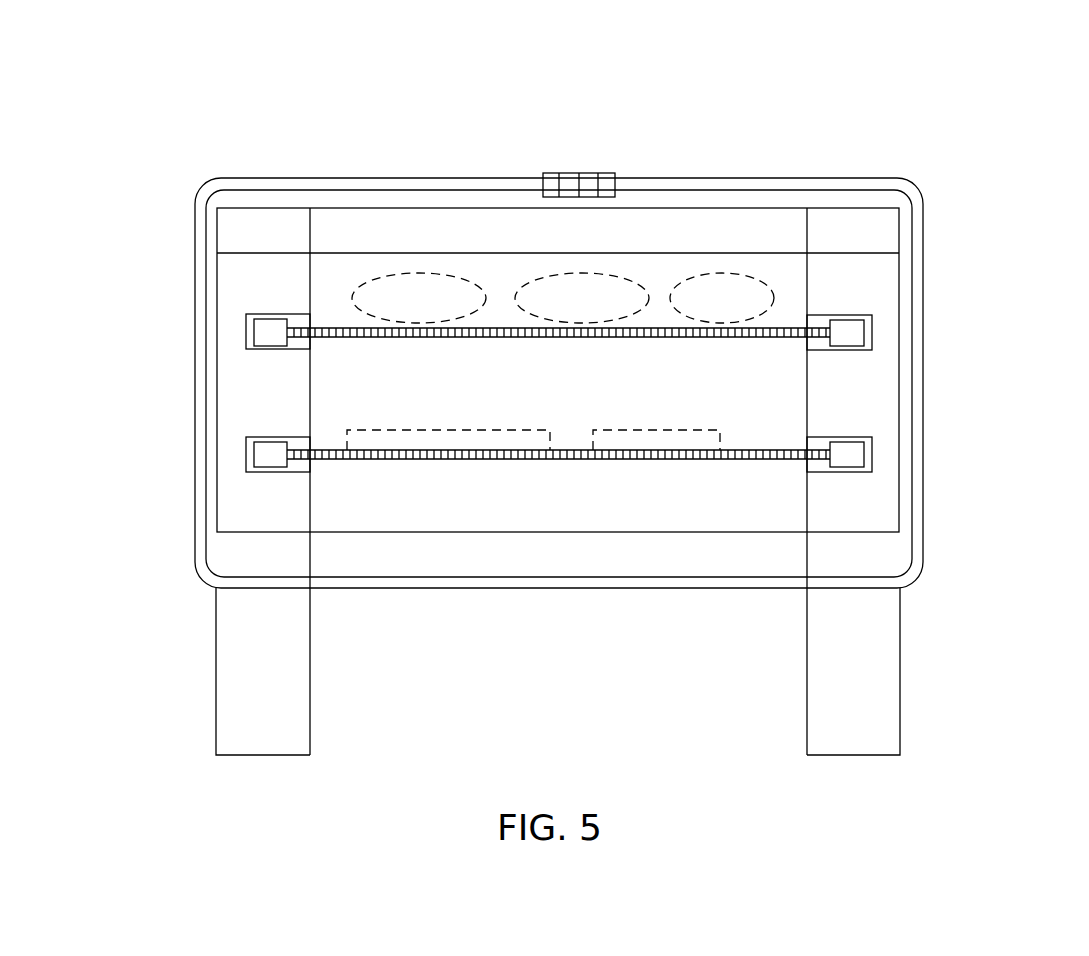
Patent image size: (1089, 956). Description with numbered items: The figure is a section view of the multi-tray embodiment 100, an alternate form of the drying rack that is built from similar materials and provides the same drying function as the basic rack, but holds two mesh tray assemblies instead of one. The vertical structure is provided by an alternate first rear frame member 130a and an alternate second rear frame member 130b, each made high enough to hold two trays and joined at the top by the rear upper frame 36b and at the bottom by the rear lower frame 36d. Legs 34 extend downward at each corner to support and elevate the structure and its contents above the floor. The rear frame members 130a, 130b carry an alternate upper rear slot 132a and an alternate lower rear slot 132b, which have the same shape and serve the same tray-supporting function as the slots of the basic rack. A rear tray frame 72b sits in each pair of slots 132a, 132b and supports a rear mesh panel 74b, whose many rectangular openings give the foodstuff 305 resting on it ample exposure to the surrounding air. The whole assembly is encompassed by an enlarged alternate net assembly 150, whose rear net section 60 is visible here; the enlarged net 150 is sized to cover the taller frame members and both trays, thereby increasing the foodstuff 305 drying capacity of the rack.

The multi-tray embodiment 100 is at (222, 78).
The alternate net assembly 150 is at (304, 185).
The rear net section 60 is at (588, 173).
The rear upper frame 36b is at (770, 224).
The rear lower frame 36d is at (380, 562).
The leg 34 is at (216, 680).
The rear tray frame 72b is at (267, 332).
The alternate upper rear slot 132a is at (245, 342).
The alternate lower rear slot 132b is at (245, 462).
The alternate first rear frame member 130a is at (243, 518).
The alternate second rear frame member 130b is at (883, 505).
The rear mesh panel 74b is at (435, 337).
The foodstuff 305 is at (732, 310).